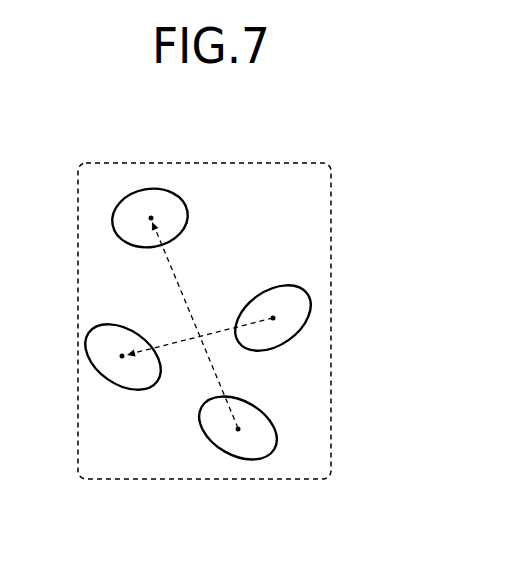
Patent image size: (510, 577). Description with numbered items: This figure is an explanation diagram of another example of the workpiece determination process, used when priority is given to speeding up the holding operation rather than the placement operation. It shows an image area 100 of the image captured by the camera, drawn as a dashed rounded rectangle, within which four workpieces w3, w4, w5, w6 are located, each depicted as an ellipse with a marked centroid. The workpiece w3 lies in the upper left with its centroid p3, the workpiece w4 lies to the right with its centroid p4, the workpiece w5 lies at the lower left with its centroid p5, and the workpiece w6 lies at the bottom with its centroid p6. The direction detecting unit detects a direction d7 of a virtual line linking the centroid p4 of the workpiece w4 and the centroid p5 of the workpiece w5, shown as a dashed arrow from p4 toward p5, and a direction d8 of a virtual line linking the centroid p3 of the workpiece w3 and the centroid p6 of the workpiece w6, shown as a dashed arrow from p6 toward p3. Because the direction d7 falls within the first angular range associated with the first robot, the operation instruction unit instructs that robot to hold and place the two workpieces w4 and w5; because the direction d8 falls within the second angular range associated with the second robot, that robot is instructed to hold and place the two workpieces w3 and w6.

The image area 100 is at (331, 208).
The workpiece w3 is at (140, 188).
The workpiece w4 is at (308, 328).
The workpiece w5 is at (92, 368).
The workpiece w6 is at (240, 460).
The centroid p3 is at (153, 217).
The centroid p4 is at (273, 316).
The centroid p5 is at (122, 354).
The centroid p6 is at (241, 428).
The direction d7 is at (196, 350).
The direction d8 is at (188, 309).